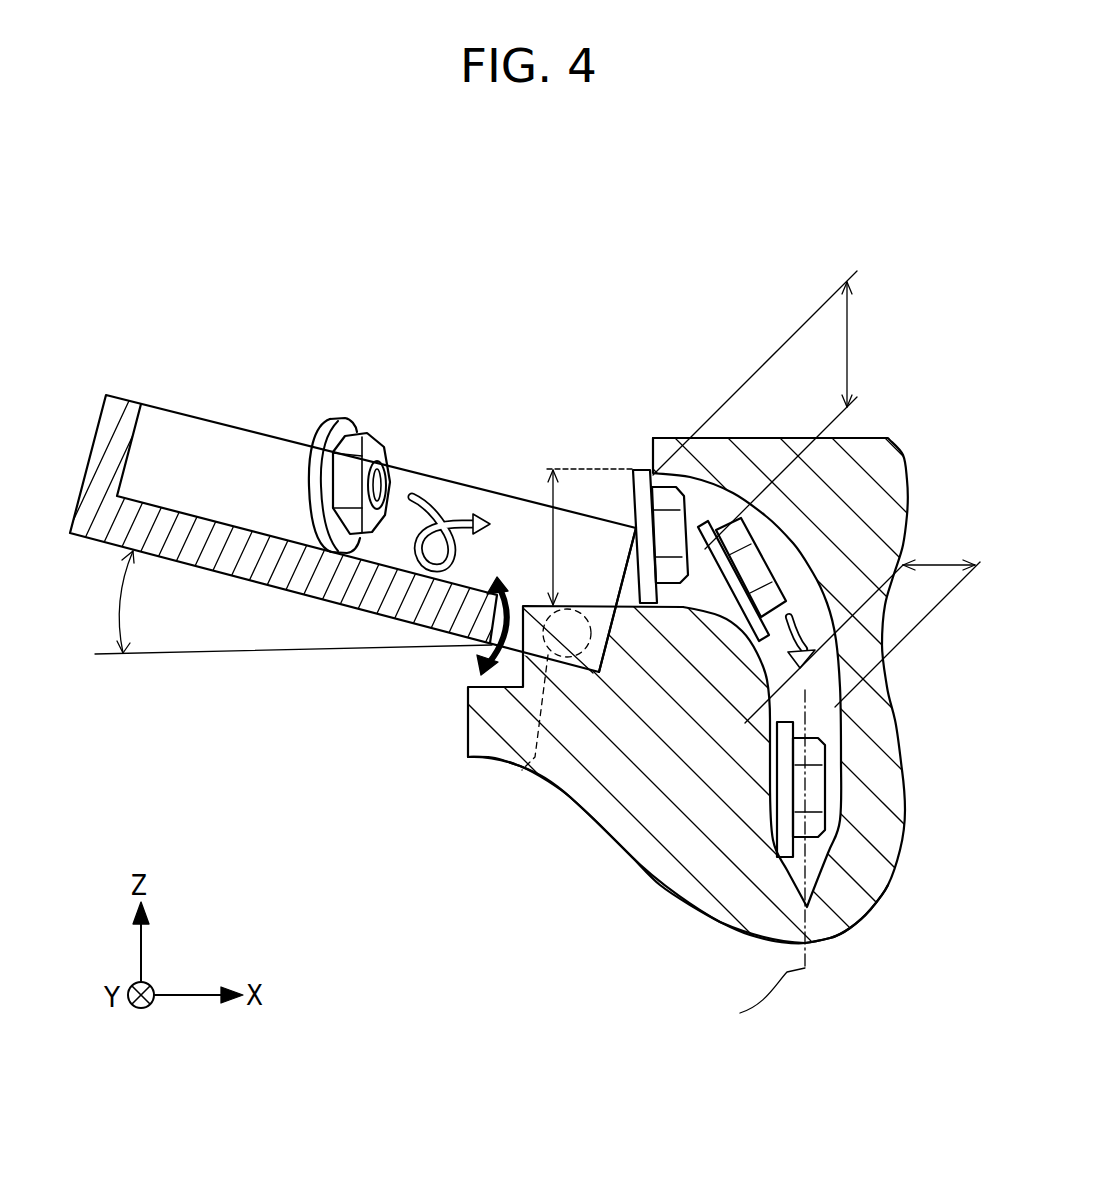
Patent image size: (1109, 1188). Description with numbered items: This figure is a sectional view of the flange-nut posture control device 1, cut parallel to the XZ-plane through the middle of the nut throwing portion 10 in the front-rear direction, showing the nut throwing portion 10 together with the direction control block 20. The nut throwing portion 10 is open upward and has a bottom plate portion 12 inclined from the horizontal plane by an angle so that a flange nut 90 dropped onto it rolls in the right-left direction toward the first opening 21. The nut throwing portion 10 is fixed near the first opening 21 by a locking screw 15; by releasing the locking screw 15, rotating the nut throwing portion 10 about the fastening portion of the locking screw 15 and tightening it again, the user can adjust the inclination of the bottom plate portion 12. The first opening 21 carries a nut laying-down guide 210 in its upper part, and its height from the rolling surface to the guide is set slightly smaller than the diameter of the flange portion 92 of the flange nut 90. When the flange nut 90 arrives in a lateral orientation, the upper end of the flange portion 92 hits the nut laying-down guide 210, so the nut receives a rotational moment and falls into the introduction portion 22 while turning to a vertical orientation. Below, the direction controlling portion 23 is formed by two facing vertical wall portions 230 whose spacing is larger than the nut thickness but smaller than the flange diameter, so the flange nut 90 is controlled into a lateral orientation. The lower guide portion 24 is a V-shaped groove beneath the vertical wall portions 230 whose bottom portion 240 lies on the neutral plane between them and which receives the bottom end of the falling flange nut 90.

The flange-nut posture control device 1 is at (514, 303).
The nut throwing portion 10 is at (118, 397).
The bottom plate portion 12 is at (225, 524).
The locking screw 15 is at (522, 770).
The direction control block 20 is at (890, 437).
The first opening 21 is at (611, 496).
The introduction portion 22 is at (777, 557).
The direction controlling portion 23 is at (850, 813).
The lower guide portion 24 is at (790, 880).
The flange nut 90 is at (338, 419).
The flange portion 92 is at (633, 470).
The nut laying-down guide 210 is at (645, 469).
The vertical wall portions 230 is at (843, 763).
The bottom portion 240 is at (847, 935).